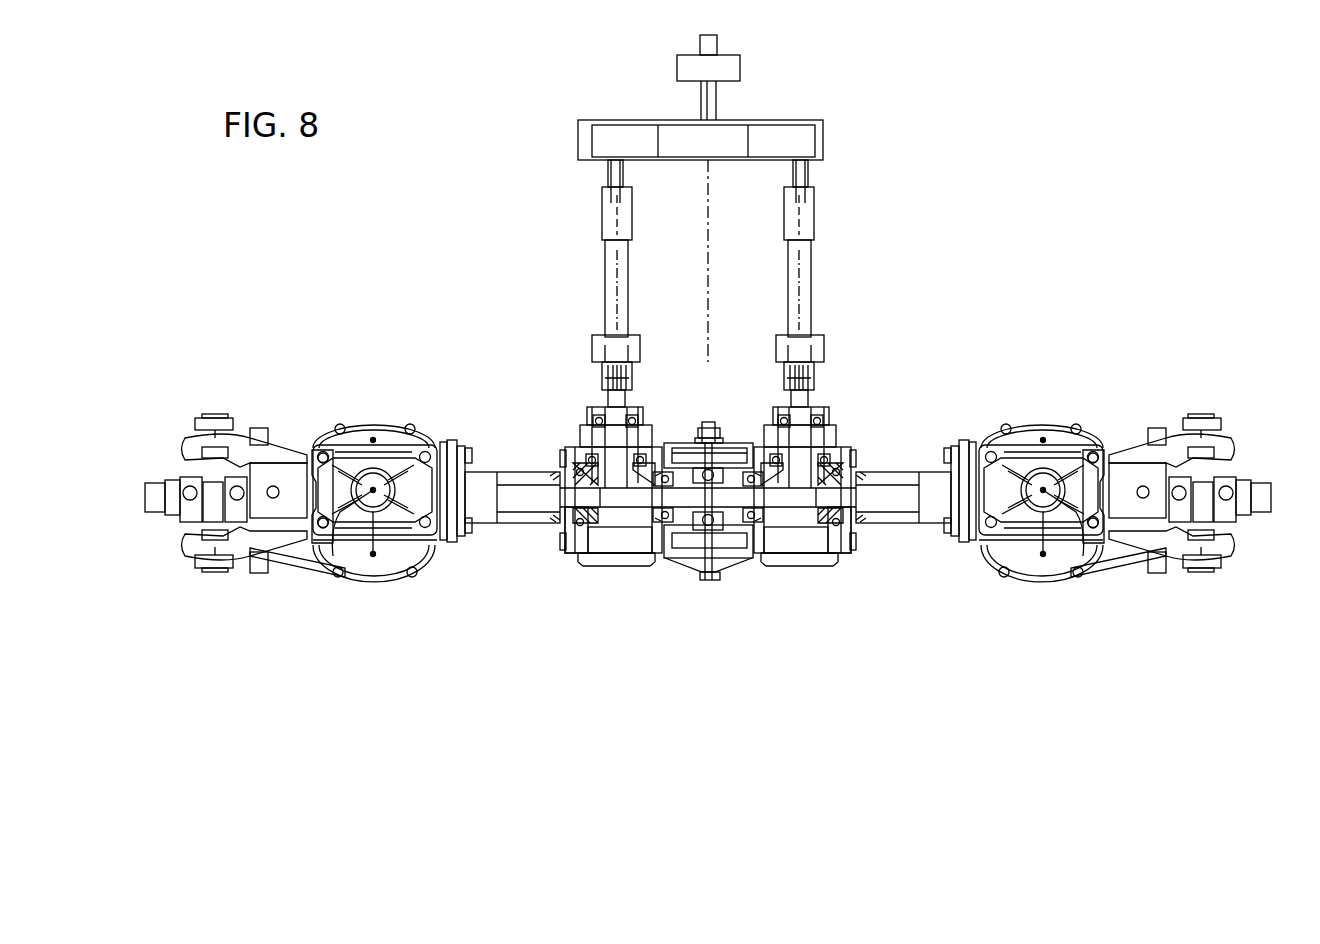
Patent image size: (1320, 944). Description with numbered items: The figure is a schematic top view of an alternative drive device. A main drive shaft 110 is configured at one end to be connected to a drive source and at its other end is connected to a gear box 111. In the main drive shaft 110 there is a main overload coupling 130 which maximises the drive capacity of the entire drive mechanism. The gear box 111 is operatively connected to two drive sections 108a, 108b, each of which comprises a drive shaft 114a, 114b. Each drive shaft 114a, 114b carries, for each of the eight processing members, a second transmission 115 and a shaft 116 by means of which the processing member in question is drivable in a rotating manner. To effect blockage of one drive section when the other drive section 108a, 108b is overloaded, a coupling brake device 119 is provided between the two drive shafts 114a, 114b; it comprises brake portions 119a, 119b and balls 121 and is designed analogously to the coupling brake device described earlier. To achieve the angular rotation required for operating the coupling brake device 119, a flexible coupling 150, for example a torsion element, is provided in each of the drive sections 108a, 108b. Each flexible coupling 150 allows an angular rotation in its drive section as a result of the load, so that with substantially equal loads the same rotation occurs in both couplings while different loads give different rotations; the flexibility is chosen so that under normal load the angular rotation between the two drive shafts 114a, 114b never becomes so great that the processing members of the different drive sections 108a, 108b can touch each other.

The drive section 108a is at (500, 400).
The drive section 108b is at (916, 400).
The main drive shaft 110 is at (708, 111).
The gear box 111 is at (797, 142).
The drive shaft 114a is at (533, 497).
The drive shaft 114b is at (883, 497).
The second transmission 115 is at (383, 440).
The shaft 116 is at (398, 577).
The coupling brake device 119 is at (703, 535).
The brake portion 119a is at (650, 552).
The brake portion 119b is at (766, 552).
The balls 121 is at (742, 487).
The main overload coupling 130 is at (687, 67).
The flexible coupling 150 is at (598, 342).